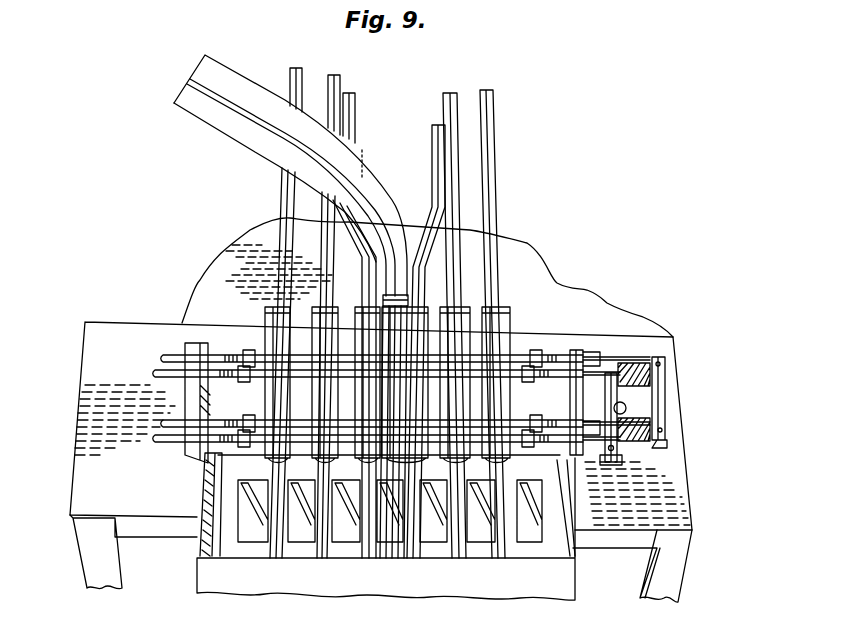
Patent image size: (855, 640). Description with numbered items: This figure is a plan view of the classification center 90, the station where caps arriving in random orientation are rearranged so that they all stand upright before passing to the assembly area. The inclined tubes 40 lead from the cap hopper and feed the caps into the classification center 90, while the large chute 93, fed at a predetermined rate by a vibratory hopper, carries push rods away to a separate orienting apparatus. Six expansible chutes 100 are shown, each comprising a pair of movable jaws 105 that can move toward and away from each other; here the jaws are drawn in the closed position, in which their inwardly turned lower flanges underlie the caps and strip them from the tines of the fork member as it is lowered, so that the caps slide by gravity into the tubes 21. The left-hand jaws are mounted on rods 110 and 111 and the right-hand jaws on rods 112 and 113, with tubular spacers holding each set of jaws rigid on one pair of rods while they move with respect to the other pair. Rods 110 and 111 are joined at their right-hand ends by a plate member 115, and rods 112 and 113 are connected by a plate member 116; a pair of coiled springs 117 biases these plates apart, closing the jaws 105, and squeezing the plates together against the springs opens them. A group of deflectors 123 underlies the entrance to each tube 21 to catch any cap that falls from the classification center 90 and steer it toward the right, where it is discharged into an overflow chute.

The large chute 93 is at (225, 86).
The inclined tubes 40 is at (490, 135).
The expansible chute 100 is at (268, 325).
The movable jaws 105 is at (510, 327).
The rod 110 is at (163, 357).
The rod 112 is at (158, 372).
The rod 111 is at (160, 420).
The rod 113 is at (155, 438).
The coiled springs 117 is at (647, 370).
The plate member 115 is at (658, 358).
The plate member 116 is at (613, 458).
The classification center 90 is at (136, 501).
The deflectors 123 is at (260, 498).
The tubes 21 is at (277, 543).